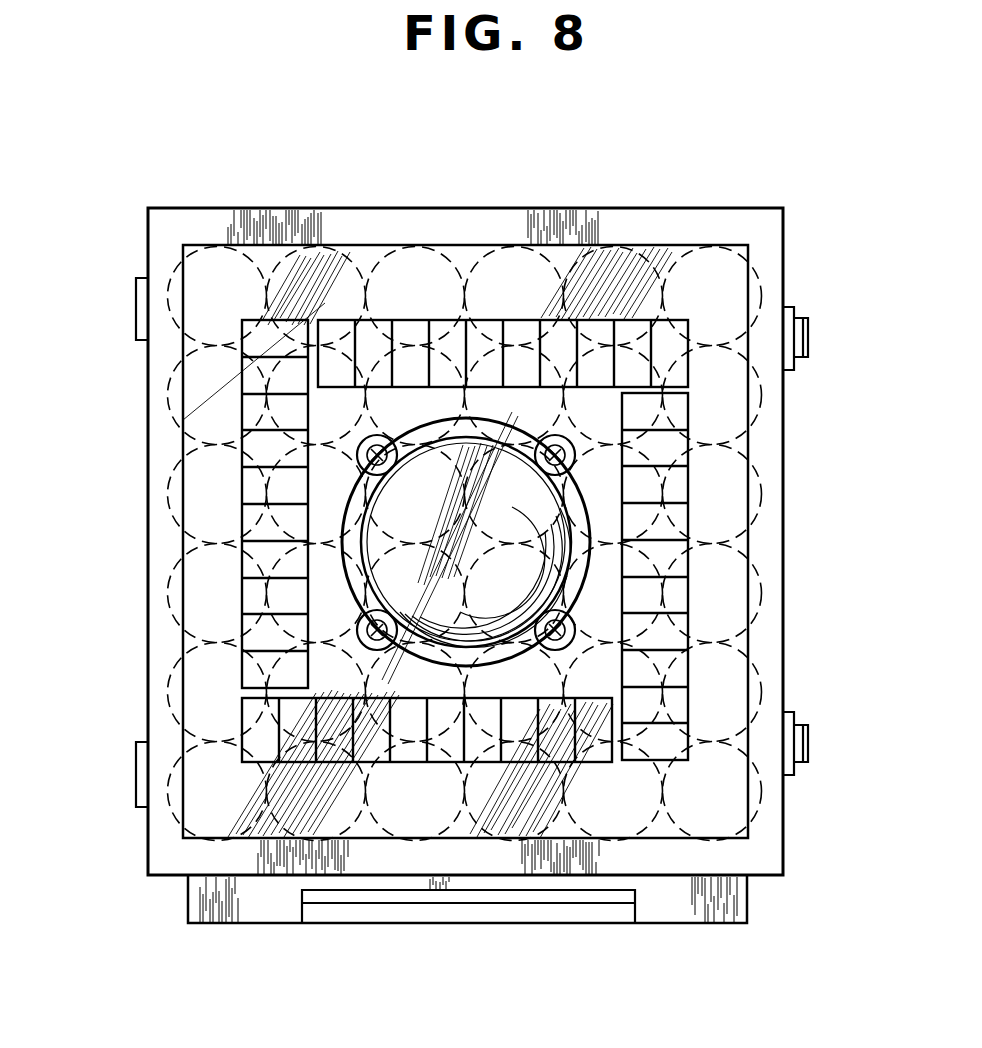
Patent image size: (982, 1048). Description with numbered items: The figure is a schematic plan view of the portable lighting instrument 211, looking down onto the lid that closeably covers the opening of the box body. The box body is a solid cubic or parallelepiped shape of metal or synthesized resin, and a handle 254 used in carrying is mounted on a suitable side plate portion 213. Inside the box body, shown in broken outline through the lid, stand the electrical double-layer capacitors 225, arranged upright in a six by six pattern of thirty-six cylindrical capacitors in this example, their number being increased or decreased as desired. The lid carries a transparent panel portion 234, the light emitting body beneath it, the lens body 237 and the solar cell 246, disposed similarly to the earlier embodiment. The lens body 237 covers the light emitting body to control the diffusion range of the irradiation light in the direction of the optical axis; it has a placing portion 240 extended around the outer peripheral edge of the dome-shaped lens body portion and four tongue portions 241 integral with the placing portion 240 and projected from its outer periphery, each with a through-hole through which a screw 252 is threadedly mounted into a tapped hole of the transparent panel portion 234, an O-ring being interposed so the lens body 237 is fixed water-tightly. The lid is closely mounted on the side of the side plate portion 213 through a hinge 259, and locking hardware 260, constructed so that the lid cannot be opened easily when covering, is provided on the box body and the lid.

The portable lighting instrument 211 is at (320, 200).
The side plate portion 213 is at (257, 877).
The electrical double-layer capacitors 225 is at (525, 250).
The transparent panel portion 234 is at (667, 826).
The lens body 237 is at (420, 477).
The placing portion 240 is at (343, 545).
The tongue portions 241 is at (352, 453).
The solar cell 246 is at (418, 320).
The screw 252 is at (565, 622).
The handle 254 is at (502, 910).
The hinge 259 is at (136, 307).
The locking hardware 260 is at (809, 337).